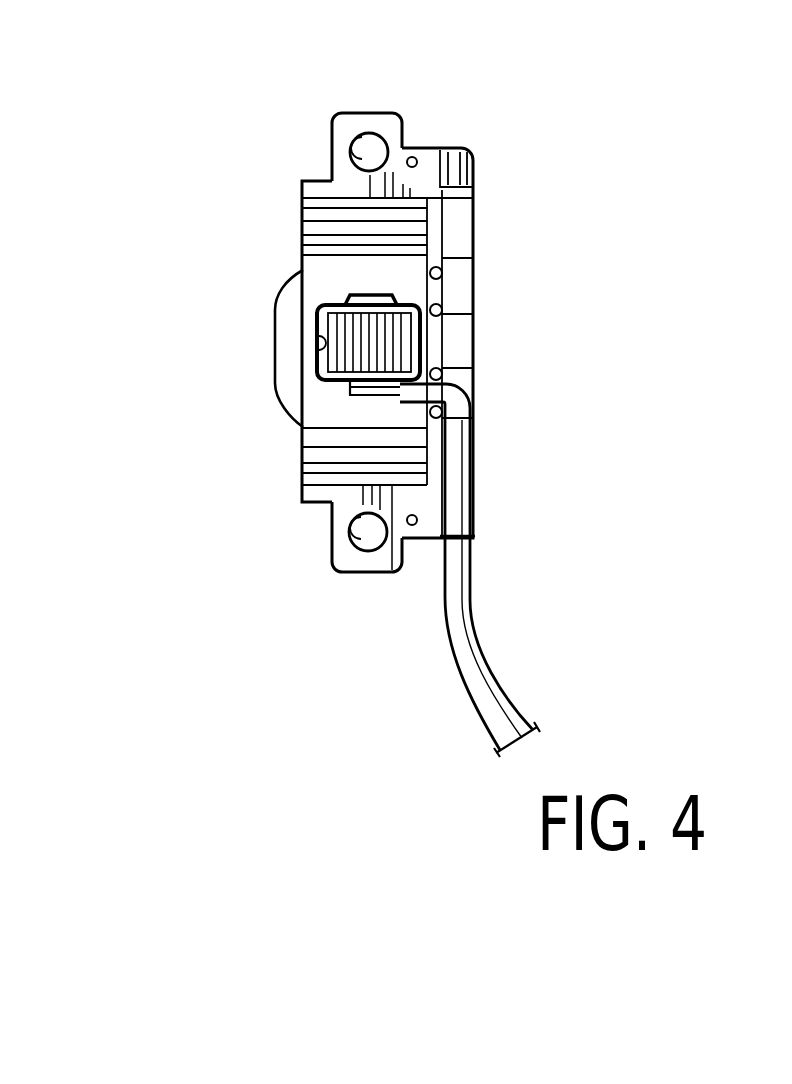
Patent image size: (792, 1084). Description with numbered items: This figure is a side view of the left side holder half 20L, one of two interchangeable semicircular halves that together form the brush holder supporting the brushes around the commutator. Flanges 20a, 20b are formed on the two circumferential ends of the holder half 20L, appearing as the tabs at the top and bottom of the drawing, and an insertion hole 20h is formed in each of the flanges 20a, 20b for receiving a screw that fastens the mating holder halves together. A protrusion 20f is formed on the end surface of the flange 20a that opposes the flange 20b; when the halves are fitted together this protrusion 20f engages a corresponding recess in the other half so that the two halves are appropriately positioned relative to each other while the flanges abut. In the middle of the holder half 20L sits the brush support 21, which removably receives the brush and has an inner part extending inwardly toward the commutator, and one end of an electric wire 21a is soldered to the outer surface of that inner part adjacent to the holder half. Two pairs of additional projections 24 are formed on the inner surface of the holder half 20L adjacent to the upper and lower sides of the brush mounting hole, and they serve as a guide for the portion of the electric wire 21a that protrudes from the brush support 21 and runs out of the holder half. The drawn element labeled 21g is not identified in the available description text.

The left side holder half 20L is at (491, 221).
The flange 20b is at (343, 130).
The flange 20a is at (368, 572).
The insertion hole 20h is at (350, 156).
The protrusion 20f is at (410, 152).
The brush support 21 is at (320, 345).
The electric wire 21a is at (488, 672).
The lead wire hole 21g is at (415, 540).
The additional projections 24 is at (443, 310).